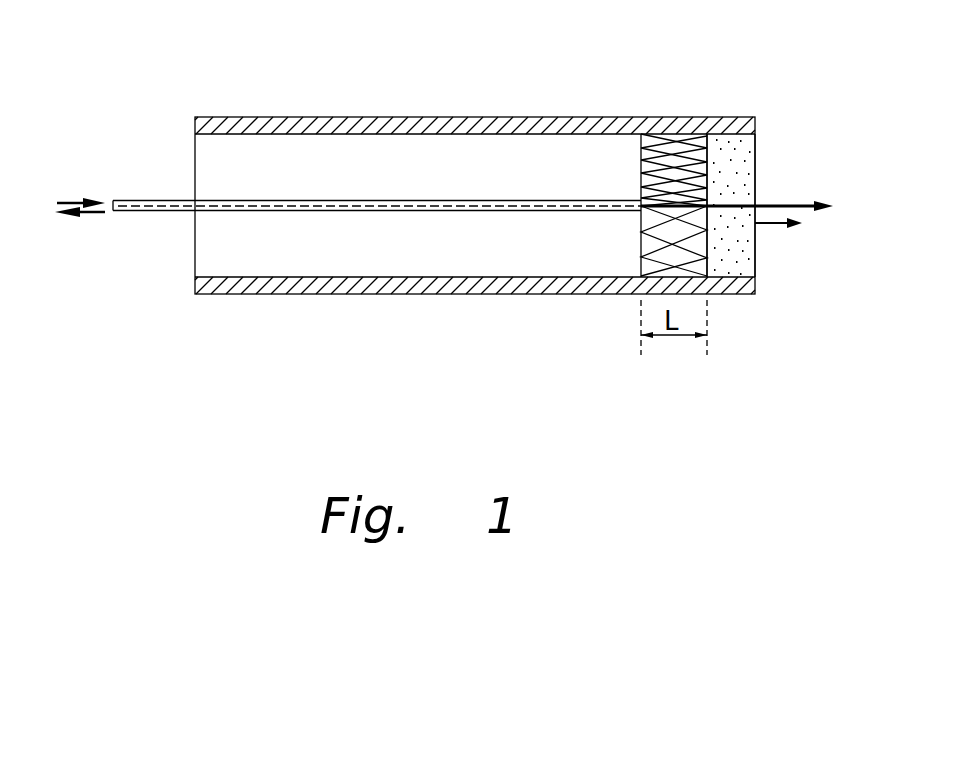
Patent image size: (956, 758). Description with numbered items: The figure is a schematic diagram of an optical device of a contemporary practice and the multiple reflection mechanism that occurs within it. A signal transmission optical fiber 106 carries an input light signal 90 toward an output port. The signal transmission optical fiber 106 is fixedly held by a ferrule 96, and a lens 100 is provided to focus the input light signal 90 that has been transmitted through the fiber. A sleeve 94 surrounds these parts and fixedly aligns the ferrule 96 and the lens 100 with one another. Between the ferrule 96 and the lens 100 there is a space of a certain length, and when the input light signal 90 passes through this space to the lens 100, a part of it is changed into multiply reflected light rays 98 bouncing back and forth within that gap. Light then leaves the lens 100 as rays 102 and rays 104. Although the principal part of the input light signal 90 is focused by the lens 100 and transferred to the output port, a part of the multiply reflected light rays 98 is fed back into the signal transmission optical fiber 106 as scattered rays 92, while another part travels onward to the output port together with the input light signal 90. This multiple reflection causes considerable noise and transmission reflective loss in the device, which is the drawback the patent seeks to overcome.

The input light signal 90 is at (72, 200).
The scattered rays 92 is at (90, 215).
The sleeve 94 is at (397, 128).
The ferrule 96 is at (527, 150).
The multiply reflected light rays 98 is at (675, 137).
The lens 100 is at (733, 137).
The rays 102 is at (792, 202).
The rays 104 is at (773, 227).
The signal transmission optical fiber 106 is at (517, 207).